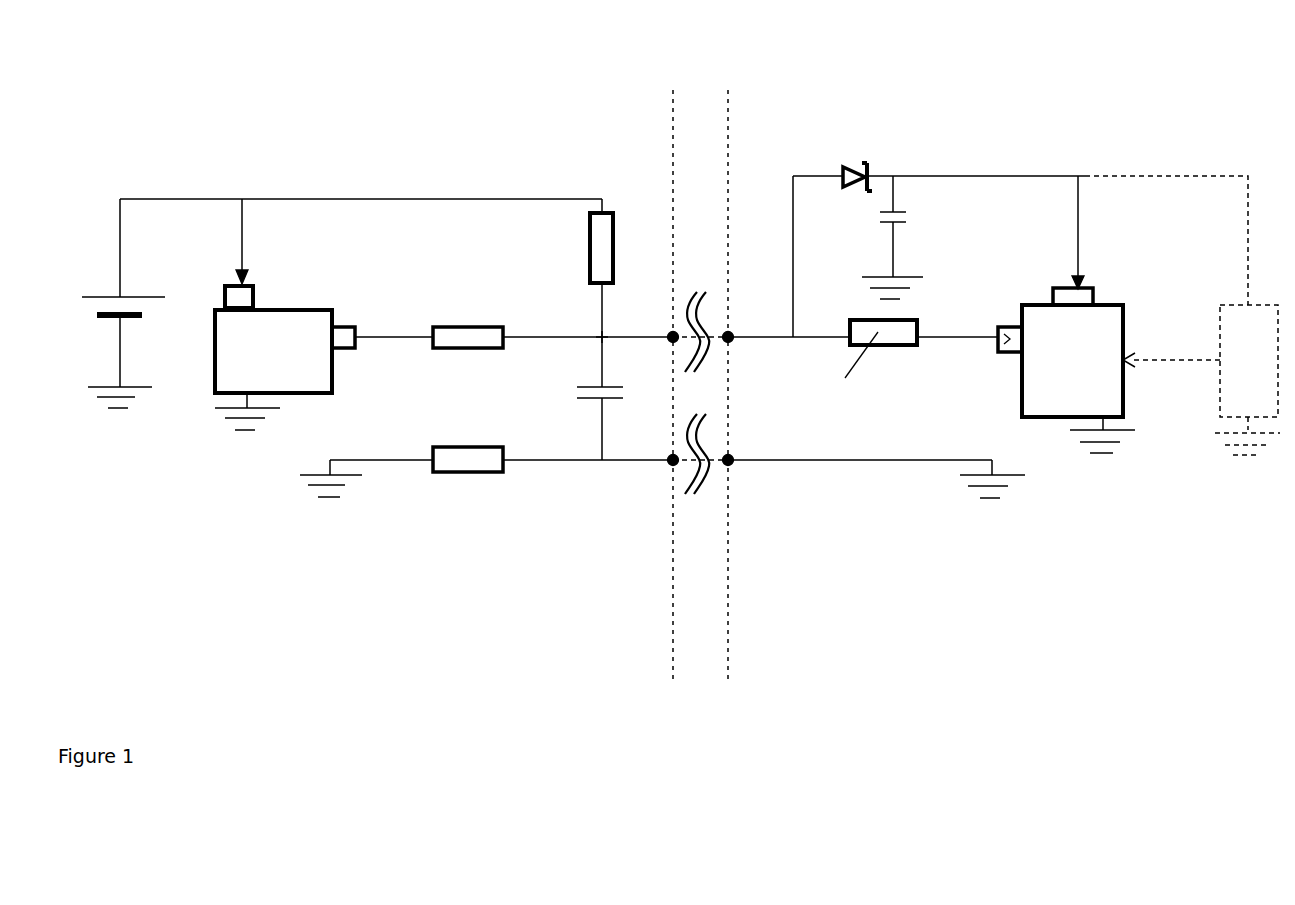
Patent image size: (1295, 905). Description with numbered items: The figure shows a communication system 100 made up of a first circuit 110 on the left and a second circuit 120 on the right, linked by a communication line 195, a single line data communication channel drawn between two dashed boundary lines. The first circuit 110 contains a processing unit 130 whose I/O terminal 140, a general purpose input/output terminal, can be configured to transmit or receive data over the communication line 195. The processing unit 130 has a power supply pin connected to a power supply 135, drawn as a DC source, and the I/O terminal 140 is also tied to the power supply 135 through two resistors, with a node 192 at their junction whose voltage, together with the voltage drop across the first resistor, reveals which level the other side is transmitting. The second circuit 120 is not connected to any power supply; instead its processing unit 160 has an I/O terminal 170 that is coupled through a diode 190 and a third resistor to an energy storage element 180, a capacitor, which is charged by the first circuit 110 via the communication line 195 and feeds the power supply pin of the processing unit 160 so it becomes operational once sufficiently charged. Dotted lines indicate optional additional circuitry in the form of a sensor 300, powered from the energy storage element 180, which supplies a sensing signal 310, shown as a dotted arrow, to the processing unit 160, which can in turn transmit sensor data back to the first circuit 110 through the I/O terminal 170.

The communication system 100 is at (160, 47).
The first circuit 110 is at (304, 147).
The second circuit 120 is at (1104, 118).
The processing unit 130 is at (263, 323).
The power supply 135 is at (133, 303).
The I/O terminal 140 is at (351, 337).
The processing unit 160 is at (1105, 314).
The I/O terminal 170 is at (1003, 345).
The energy storage element 180 is at (905, 215).
The diode 190 is at (847, 172).
The node 192 is at (601, 340).
The communication line 195 is at (700, 346).
The sensor 300 is at (1250, 390).
The sensing signal 310 is at (1160, 362).